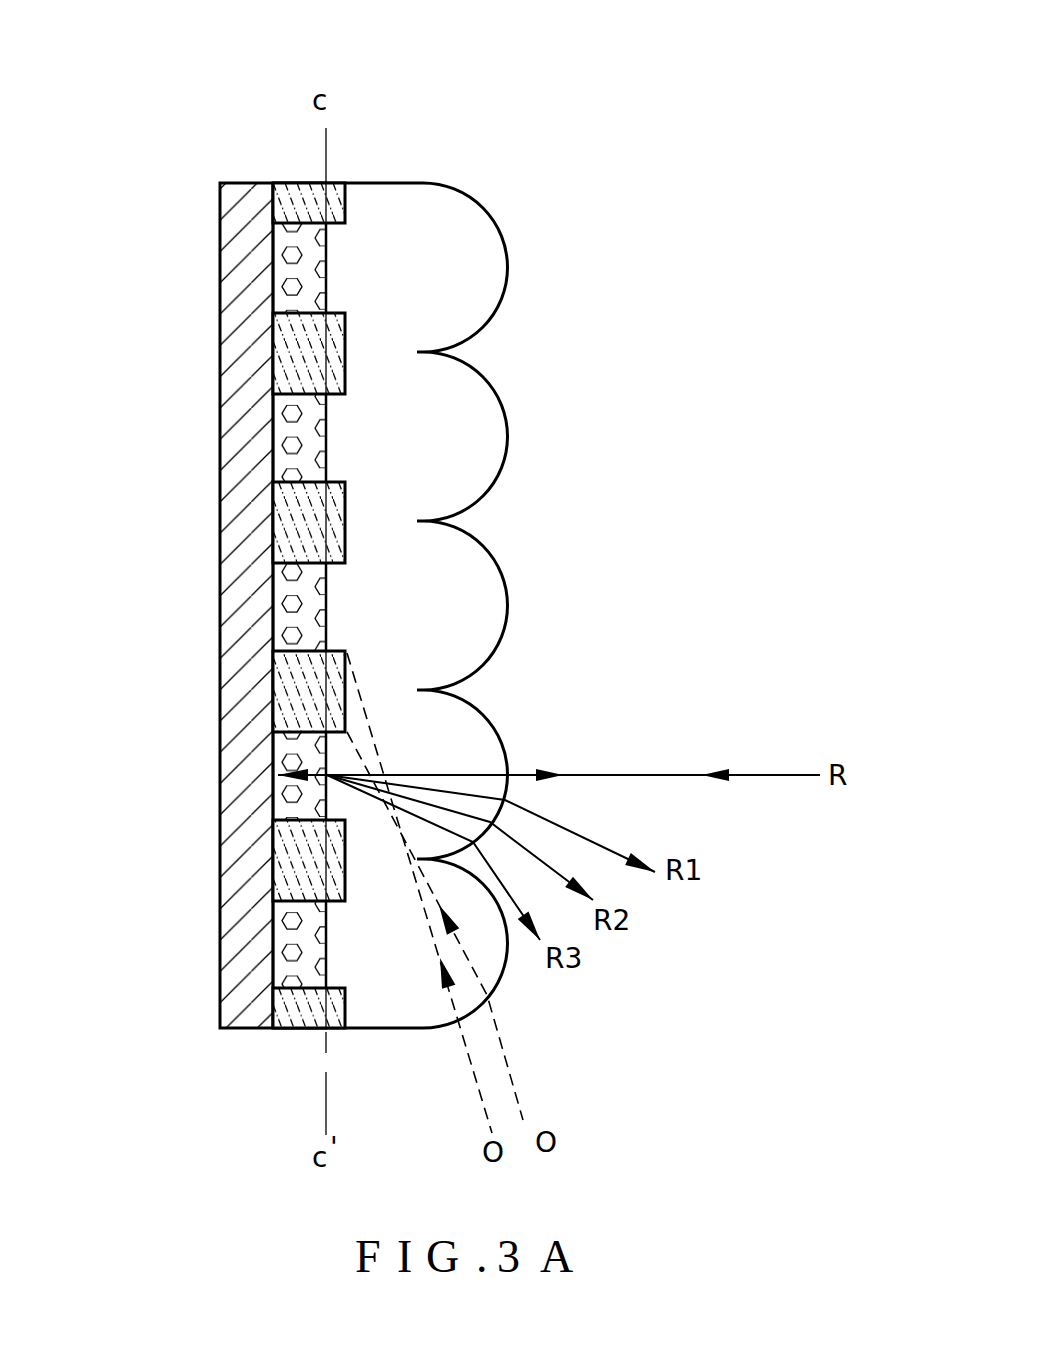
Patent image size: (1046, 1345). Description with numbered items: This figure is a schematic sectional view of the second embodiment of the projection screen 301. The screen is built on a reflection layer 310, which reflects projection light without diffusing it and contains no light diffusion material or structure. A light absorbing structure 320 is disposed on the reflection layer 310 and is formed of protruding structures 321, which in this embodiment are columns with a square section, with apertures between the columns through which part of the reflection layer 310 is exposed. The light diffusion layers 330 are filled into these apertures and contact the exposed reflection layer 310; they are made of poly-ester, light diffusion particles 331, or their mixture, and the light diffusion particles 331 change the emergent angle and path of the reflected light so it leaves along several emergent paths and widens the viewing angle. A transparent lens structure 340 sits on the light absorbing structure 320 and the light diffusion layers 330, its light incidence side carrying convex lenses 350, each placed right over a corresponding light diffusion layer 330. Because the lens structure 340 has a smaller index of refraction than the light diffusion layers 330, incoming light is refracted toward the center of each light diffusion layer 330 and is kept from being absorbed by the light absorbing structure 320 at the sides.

The projection screen 301 is at (133, 49).
The reflection layer 310 is at (248, 638).
The light absorbing structure 320 is at (297, 1028).
The protruding structures 321 is at (347, 377).
The light diffusion layers 330 is at (327, 275).
The light diffusion particles 331 is at (290, 288).
The lens structure 340 is at (450, 452).
The convex lenses 350 is at (500, 645).